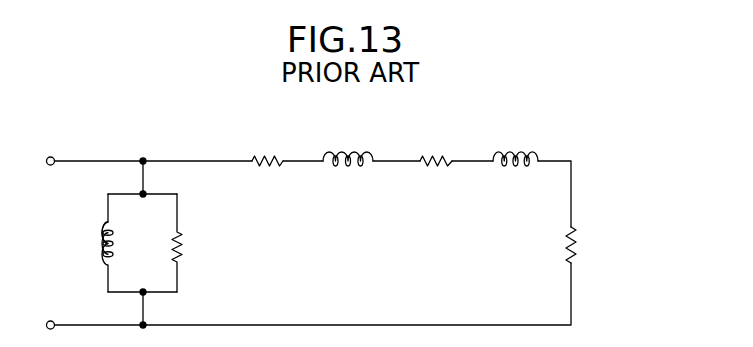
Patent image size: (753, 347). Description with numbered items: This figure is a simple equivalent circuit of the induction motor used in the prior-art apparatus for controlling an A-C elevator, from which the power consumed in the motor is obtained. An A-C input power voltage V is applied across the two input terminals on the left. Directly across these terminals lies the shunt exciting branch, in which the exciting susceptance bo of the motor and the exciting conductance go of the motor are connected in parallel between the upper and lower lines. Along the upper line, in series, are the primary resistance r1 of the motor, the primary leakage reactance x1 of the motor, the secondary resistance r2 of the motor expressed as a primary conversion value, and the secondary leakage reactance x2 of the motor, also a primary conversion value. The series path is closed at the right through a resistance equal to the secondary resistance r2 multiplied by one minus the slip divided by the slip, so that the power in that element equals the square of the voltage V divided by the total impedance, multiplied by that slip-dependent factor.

The A-C input power voltage V is at (50, 167).
The exciting susceptance bo is at (92, 243).
The exciting conductance go is at (194, 243).
The primary resistance r1 is at (267, 147).
The primary leakage reactance x1 is at (348, 147).
The secondary resistance r2 is at (436, 147).
The secondary leakage reactance x2 is at (515, 147).